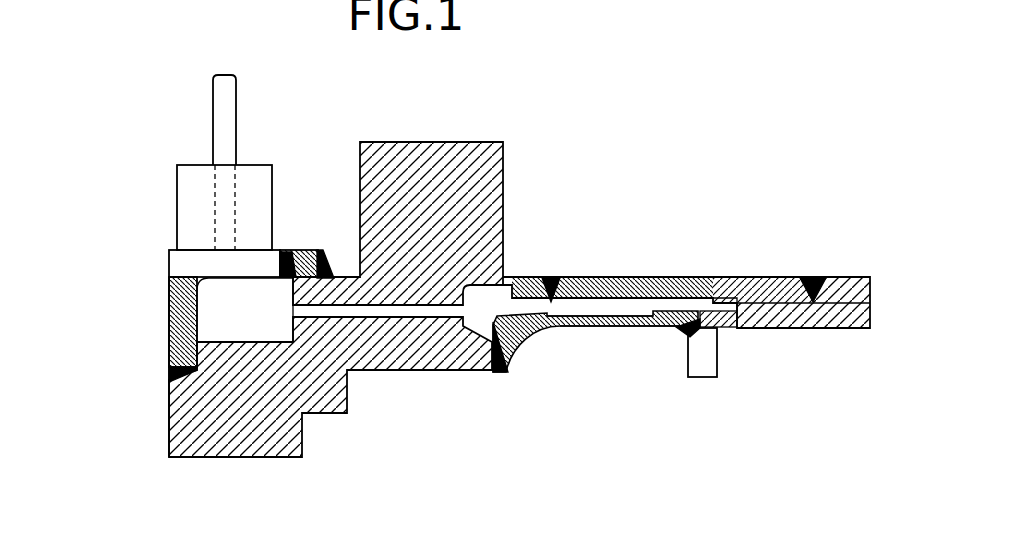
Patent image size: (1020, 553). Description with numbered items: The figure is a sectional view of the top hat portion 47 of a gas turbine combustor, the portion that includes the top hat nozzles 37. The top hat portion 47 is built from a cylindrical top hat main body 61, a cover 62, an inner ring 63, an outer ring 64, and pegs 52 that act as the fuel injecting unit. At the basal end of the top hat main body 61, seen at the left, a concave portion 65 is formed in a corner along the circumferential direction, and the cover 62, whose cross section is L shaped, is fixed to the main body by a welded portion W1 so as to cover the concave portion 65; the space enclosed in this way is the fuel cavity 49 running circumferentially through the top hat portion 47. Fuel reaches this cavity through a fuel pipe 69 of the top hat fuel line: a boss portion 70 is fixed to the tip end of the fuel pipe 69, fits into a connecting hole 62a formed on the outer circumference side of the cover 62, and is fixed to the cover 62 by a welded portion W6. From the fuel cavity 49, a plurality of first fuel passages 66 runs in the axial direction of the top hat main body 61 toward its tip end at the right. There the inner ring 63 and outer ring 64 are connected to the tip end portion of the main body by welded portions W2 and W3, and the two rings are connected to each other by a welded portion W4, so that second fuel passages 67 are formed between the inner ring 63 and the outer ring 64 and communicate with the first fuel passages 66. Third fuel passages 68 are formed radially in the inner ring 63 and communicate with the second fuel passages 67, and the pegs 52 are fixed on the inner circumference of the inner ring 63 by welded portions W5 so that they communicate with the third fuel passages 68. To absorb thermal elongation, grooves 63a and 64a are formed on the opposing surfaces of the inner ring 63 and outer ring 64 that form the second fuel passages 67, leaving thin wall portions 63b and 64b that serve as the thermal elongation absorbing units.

The top hat nozzles 37 is at (612, 189).
The top hat portion 47 is at (169, 428).
The fuel cavity 49 is at (212, 298).
The pegs 52 is at (703, 378).
The top hat main body 61 is at (205, 437).
The cover 62 is at (319, 249).
The connecting hole 62a is at (240, 263).
The inner ring 63 is at (525, 340).
The groove 63a is at (582, 315).
The thin wall portion 63b is at (627, 327).
The outer ring 64 is at (782, 290).
The groove 64a is at (706, 292).
The thin wall portion 64b is at (600, 283).
The concave portion 65 is at (240, 340).
The first fuel passages 66 is at (405, 312).
The second fuel passages 67 is at (660, 290).
The third fuel passages 68 is at (716, 323).
The fuel pipe 69 is at (215, 100).
The boss portion 70 is at (205, 185).
The welded portion W1 is at (172, 372).
The welded portion W2 is at (500, 368).
The welded portion W3 is at (547, 277).
The welded portion W4 is at (823, 285).
The welded portion W5 is at (684, 336).
The welded portion W6 is at (291, 249).